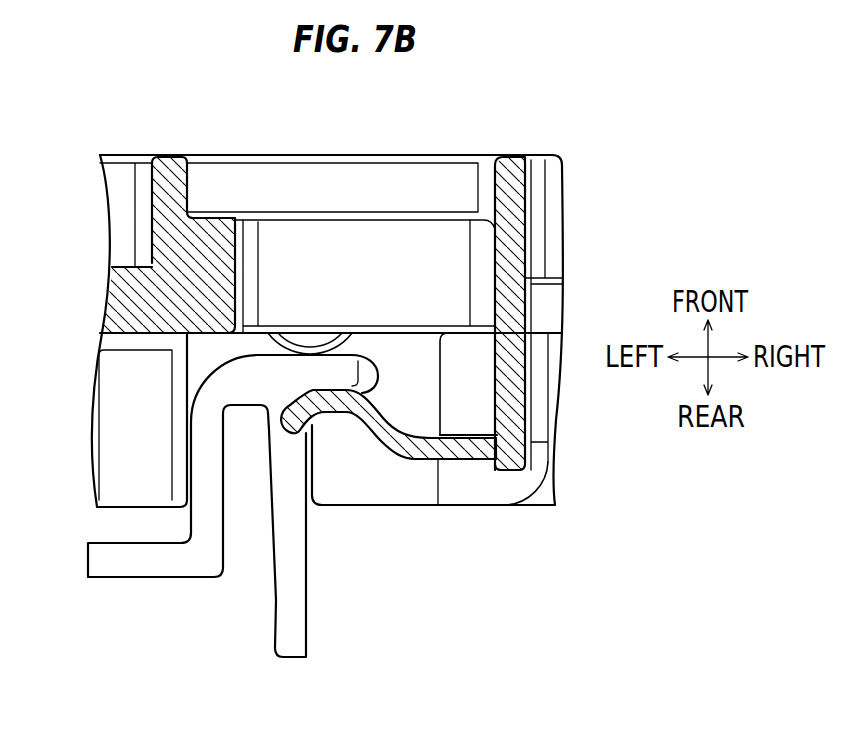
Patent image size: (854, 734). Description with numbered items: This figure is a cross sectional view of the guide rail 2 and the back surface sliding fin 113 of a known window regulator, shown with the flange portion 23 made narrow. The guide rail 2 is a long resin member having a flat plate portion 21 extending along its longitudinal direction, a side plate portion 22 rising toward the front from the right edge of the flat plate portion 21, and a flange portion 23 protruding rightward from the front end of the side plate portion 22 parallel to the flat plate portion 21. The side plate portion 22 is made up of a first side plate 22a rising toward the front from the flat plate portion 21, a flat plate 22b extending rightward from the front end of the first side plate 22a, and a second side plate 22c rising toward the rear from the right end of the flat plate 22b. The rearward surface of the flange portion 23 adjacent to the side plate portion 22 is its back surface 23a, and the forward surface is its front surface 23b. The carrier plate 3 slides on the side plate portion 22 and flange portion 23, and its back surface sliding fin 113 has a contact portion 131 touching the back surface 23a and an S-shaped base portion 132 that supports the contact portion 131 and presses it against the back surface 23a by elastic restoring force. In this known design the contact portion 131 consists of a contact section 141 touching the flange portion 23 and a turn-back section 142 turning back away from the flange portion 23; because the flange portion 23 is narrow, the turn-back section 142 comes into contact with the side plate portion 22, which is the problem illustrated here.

The guide rail 2 is at (77, 556).
The carrier plate 3 is at (96, 286).
The flat plate portion 21 is at (128, 579).
The side plate portion 22 is at (313, 665).
The first side plate 22a is at (174, 494).
The flat plate 22b is at (254, 353).
The second side plate 22c is at (306, 591).
The flange portion 23 is at (362, 372).
The back surface 23a is at (356, 430).
The front surface 23b is at (350, 357).
The back surface sliding fin 113 is at (447, 474).
The contact portion 131 is at (388, 113).
The base portion 132 is at (472, 438).
The contact section 141 is at (338, 388).
The turn-back section 142 is at (301, 405).